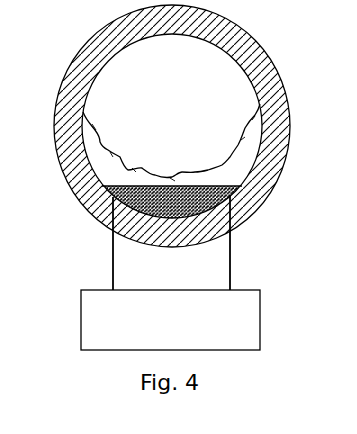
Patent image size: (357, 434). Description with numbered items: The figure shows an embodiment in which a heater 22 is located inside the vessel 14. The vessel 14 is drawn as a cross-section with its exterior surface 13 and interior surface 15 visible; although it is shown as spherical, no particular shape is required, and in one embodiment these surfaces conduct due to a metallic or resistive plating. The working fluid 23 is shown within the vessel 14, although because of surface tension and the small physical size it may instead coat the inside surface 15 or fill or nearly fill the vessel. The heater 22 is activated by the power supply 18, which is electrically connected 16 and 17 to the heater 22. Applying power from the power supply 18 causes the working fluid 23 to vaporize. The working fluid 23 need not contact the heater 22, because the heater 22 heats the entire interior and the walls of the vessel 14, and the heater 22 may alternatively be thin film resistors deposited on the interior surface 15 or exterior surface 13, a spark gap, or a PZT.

The exterior surface 13 is at (283, 92).
The vessel 14 is at (262, 103).
The interior surface 15 is at (263, 163).
The electrical connection 16 is at (233, 268).
The electrical connection 17 is at (116, 283).
The power supply 18 is at (261, 326).
The heater 22 is at (243, 210).
The working fluid 23 is at (82, 168).